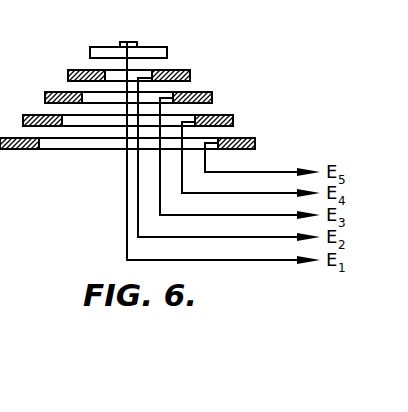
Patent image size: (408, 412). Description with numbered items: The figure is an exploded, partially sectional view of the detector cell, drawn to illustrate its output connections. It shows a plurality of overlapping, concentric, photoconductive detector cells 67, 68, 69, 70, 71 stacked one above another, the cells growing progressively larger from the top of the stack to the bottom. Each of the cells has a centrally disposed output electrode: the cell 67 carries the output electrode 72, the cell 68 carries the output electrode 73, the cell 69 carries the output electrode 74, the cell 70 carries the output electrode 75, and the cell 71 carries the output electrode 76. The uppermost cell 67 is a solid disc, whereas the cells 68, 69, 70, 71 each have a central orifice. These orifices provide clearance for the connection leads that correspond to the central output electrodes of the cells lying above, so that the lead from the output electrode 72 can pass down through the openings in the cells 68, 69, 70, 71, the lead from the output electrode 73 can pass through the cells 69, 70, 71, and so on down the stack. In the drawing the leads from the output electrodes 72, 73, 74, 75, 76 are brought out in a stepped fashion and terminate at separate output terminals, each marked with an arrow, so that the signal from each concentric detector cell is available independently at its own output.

The photoconductive detector cell 67 is at (167, 56).
The photoconductive detector cell 68 is at (190, 76).
The photoconductive detector cell 69 is at (212, 97).
The photoconductive detector cell 70 is at (233, 121).
The photoconductive detector cell 71 is at (255, 142).
The output electrode 72 is at (127, 240).
The output electrode 73 is at (203, 237).
The output electrode 74 is at (235, 215).
The output electrode 75 is at (253, 193).
The output electrode 76 is at (270, 172).